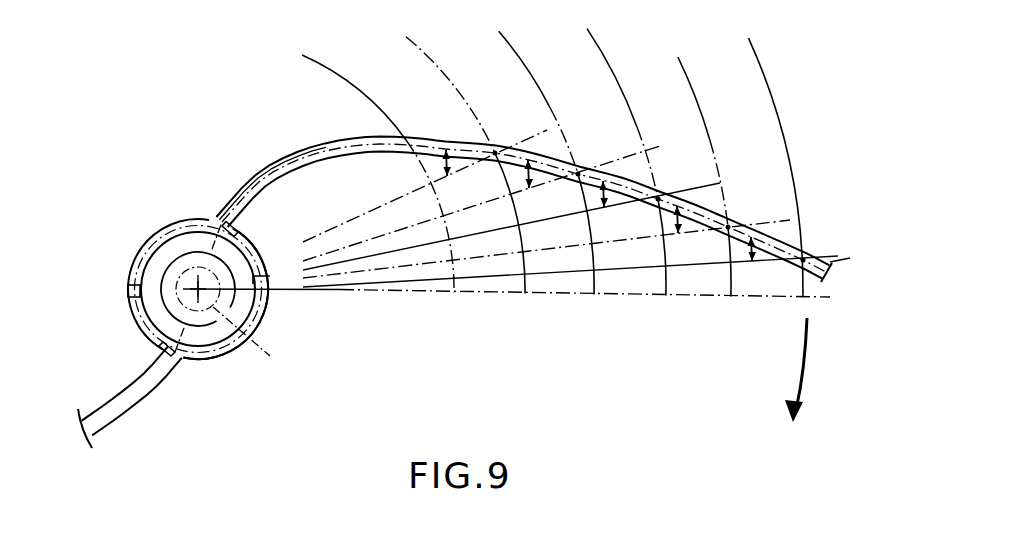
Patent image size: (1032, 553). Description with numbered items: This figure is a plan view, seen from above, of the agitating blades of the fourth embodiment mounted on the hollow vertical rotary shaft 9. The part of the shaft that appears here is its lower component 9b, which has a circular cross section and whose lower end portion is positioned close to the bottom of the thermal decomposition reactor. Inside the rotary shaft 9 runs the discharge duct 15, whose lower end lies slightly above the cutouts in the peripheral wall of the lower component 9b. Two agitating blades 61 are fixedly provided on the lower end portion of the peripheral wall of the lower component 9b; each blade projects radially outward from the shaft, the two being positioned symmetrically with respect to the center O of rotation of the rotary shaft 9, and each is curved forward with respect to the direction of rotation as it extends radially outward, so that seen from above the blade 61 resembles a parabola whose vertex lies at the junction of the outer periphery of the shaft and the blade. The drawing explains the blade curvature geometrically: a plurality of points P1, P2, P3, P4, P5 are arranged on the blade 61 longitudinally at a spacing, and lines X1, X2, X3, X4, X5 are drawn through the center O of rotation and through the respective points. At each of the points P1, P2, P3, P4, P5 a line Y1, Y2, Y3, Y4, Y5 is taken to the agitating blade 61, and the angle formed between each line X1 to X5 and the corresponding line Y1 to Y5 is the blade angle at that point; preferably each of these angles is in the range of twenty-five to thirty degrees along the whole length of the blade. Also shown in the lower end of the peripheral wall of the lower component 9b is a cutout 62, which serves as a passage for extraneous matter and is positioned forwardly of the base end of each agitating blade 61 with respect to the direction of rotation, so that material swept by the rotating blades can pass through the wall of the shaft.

The hollow vertical rotary shaft 9 is at (176, 222).
The lower component 9b is at (153, 234).
The discharge duct 15 is at (263, 343).
The center of rotation O is at (200, 292).
The agitating blade 61 is at (300, 147).
The cutout 62 is at (236, 229).
The point P1 is at (487, 144).
The point P2 is at (582, 165).
The point P3 is at (667, 188).
The point P4 is at (730, 222).
The point P5 is at (812, 252).
The line X1 is at (549, 108).
The line X2 is at (630, 146).
The line X3 is at (706, 170).
The line X4 is at (795, 197).
The line X5 is at (835, 262).
The line Y1 is at (442, 140).
The line Y2 is at (562, 143).
The line Y3 is at (646, 160).
The line Y4 is at (731, 216).
The line Y5 is at (812, 198).